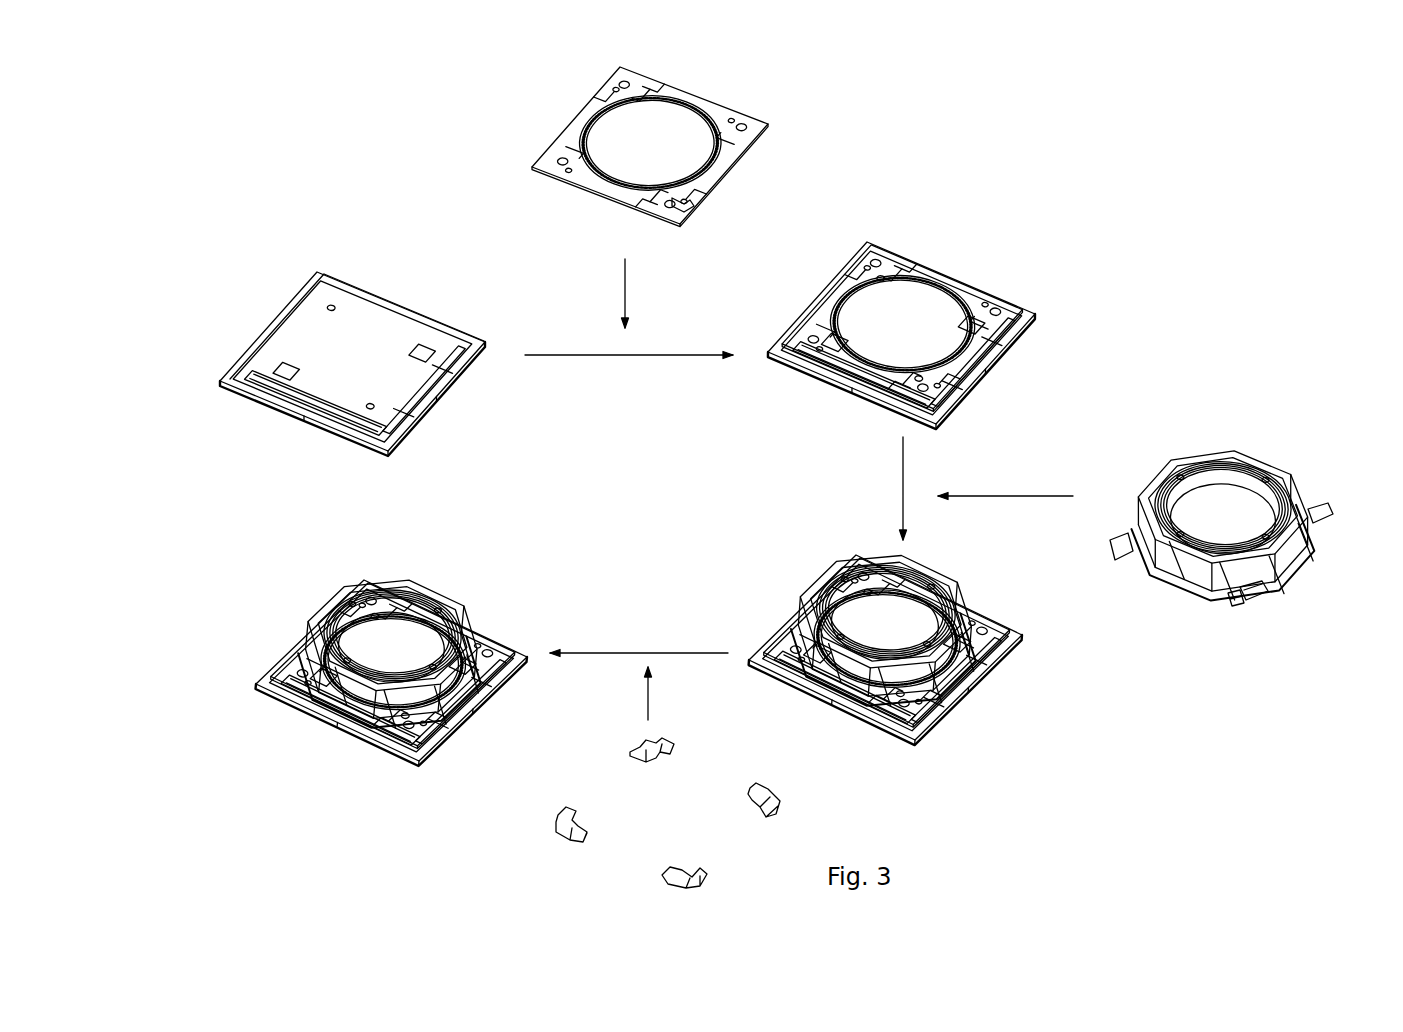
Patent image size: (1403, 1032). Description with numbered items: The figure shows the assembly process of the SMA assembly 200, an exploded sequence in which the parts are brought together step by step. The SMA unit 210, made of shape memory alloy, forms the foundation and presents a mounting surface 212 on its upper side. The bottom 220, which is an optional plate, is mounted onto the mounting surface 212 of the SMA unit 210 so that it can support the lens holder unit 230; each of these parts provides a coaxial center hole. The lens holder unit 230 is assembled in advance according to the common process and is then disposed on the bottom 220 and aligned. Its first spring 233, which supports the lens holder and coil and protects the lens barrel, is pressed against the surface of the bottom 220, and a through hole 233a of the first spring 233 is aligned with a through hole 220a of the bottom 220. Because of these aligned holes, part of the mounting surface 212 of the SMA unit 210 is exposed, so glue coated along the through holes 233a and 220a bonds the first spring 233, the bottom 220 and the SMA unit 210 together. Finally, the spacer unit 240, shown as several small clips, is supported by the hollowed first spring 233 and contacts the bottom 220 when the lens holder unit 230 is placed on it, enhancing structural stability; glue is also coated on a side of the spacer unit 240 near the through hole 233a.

The SMA assembly 200 is at (263, 652).
The SMA unit 210 is at (210, 307).
The mounting surface 212 is at (357, 293).
The bottom 220 is at (540, 133).
The through hole of the bottom 220a is at (684, 205).
The lens holder unit 230 is at (1246, 542).
The first spring 233 is at (1262, 593).
The through hole of the first spring 233a is at (1237, 604).
The spacer unit 240 is at (543, 842).